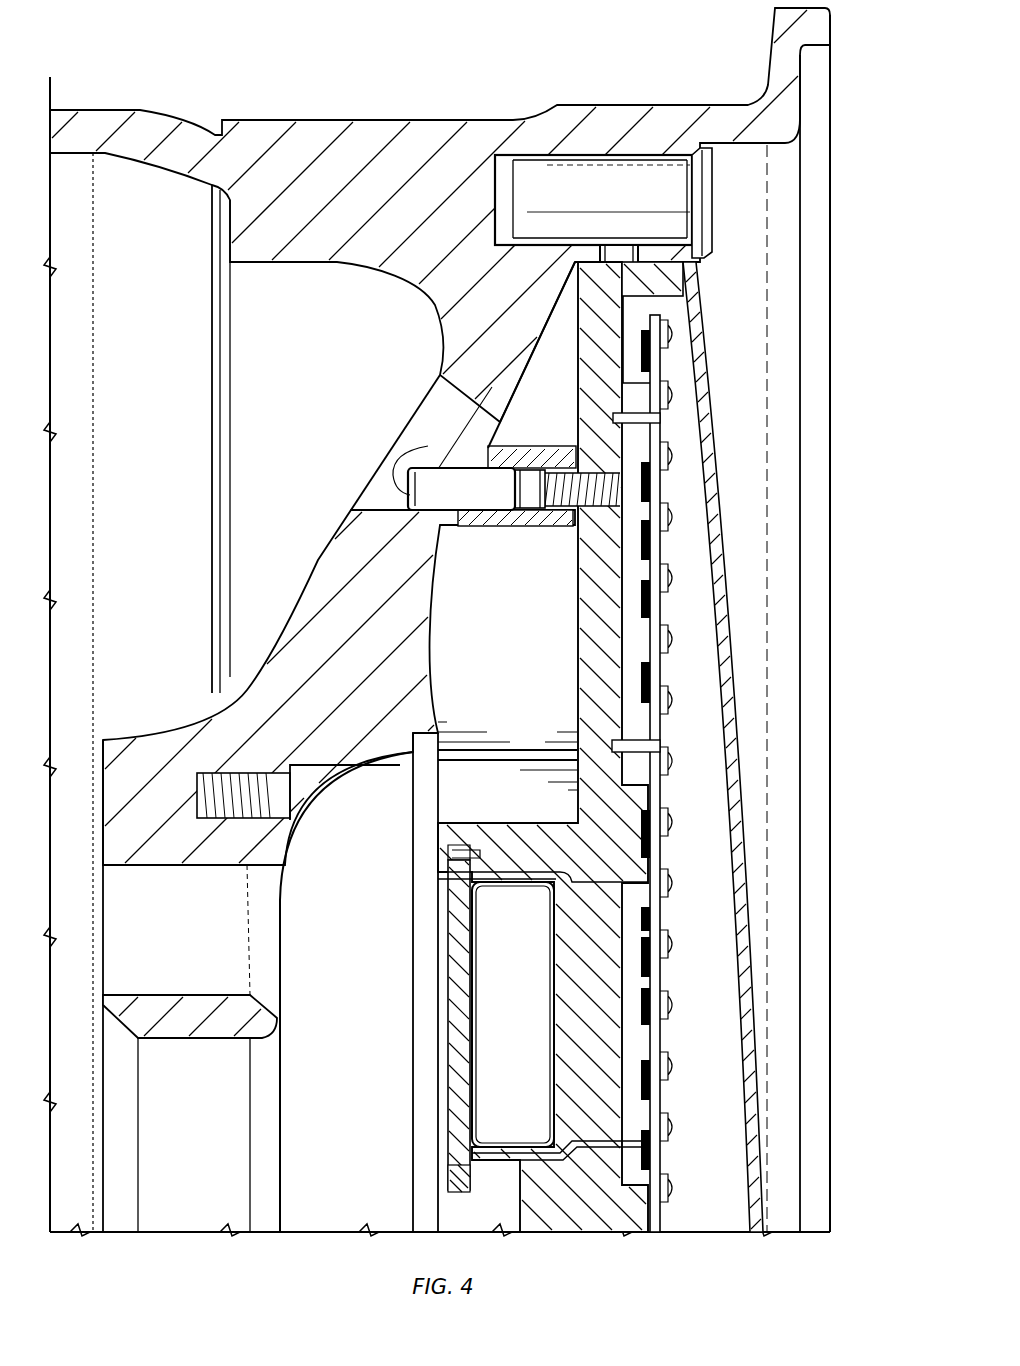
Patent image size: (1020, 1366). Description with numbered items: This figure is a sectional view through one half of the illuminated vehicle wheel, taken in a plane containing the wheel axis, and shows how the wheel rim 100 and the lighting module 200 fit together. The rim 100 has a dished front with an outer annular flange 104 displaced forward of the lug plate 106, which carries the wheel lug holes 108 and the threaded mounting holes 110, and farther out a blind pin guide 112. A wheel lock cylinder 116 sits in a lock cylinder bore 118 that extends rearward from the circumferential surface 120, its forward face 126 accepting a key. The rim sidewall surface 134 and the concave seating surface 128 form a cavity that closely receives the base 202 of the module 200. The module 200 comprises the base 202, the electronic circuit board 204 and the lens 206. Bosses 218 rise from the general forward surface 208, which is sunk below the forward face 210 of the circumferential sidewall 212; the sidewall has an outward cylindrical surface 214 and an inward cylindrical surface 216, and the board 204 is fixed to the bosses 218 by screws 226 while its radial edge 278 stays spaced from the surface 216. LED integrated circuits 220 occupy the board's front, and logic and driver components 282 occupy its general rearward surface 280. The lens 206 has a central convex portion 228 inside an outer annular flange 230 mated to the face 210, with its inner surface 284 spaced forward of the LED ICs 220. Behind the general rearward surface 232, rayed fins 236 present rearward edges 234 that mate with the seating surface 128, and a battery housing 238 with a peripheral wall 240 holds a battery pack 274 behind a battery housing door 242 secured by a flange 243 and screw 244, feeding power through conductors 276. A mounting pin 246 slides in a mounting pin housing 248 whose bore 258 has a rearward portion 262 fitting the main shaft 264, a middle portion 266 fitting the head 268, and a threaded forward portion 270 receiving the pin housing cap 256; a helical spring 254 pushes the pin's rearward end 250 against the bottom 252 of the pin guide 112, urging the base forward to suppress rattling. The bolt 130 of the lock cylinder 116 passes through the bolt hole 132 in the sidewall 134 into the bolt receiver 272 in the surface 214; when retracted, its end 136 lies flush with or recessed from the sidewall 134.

The wheel rim 100 is at (350, 68).
The outer annular flange 104 is at (833, 35).
The lug plate 106 is at (200, 1020).
The wheel lug holes 108 is at (155, 941).
The threaded mounting holes 110 is at (300, 785).
The pin guide 112 is at (400, 528).
The wheel lock cylinder 116 is at (572, 175).
The wheel lock cylinder bore 118 is at (548, 150).
The circumferential surface 120 is at (730, 140).
The forward face of lock cylinder 126 is at (714, 188).
The seating surface 128 is at (526, 362).
The bolt 130 is at (616, 260).
The bolt hole 132 is at (592, 240).
The sidewall surface 134 is at (655, 272).
The bolt end 136 is at (577, 268).
The lighting module 200 is at (617, 1252).
The base 202 is at (590, 640).
The electronic circuit board 204 is at (680, 1233).
The lens 206 is at (750, 800).
The general forward surface 208 is at (630, 1025).
The forward face of sidewall 210 is at (682, 280).
The circumferential sidewall 212 is at (643, 235).
The radially outward cylindrical surface 214 is at (688, 243).
The radially inward cylindrical surface 216 is at (683, 305).
The circuit board mounting bosses 218 is at (655, 398).
The LED integrated circuits 220 is at (680, 535).
The screws 226 is at (665, 418).
The central convex portion 228 is at (760, 935).
The outer annular flange of lens 230 is at (700, 258).
The general rearward surface 232 is at (577, 600).
The rearward edges of fins 234 is at (430, 615).
The rayed fins 236 is at (460, 703).
The battery housing 238 is at (510, 850).
The peripheral wall 240 is at (503, 1158).
The battery housing door 242 is at (450, 1020).
The flange 243 is at (450, 1178).
The screw 244 is at (450, 855).
The mounting pin 246 is at (440, 440).
The mounting pin housing 248 is at (437, 386).
The rearward end of mounting pin 250 is at (408, 478).
The bottom of pin guide 252 is at (410, 455).
The helical spring 254 is at (552, 526).
The pin housing cap 256 is at (625, 492).
The bore 258 is at (492, 526).
The rearward portion of bore 262 is at (400, 546).
The main shaft 264 is at (410, 500).
The middle portion of bore 266 is at (538, 455).
The head 268 is at (522, 580).
The forward portion of bore 270 is at (663, 460).
The bolt receiver 272 is at (580, 318).
The battery pack 274 is at (494, 1033).
The conductors 276 is at (585, 1180).
The radial edge of circuit board 278 is at (676, 330).
The general rearward surface of circuit board 280 is at (660, 1122).
The logic and driver components 282 is at (622, 660).
The inner surface of lens 284 is at (730, 778).